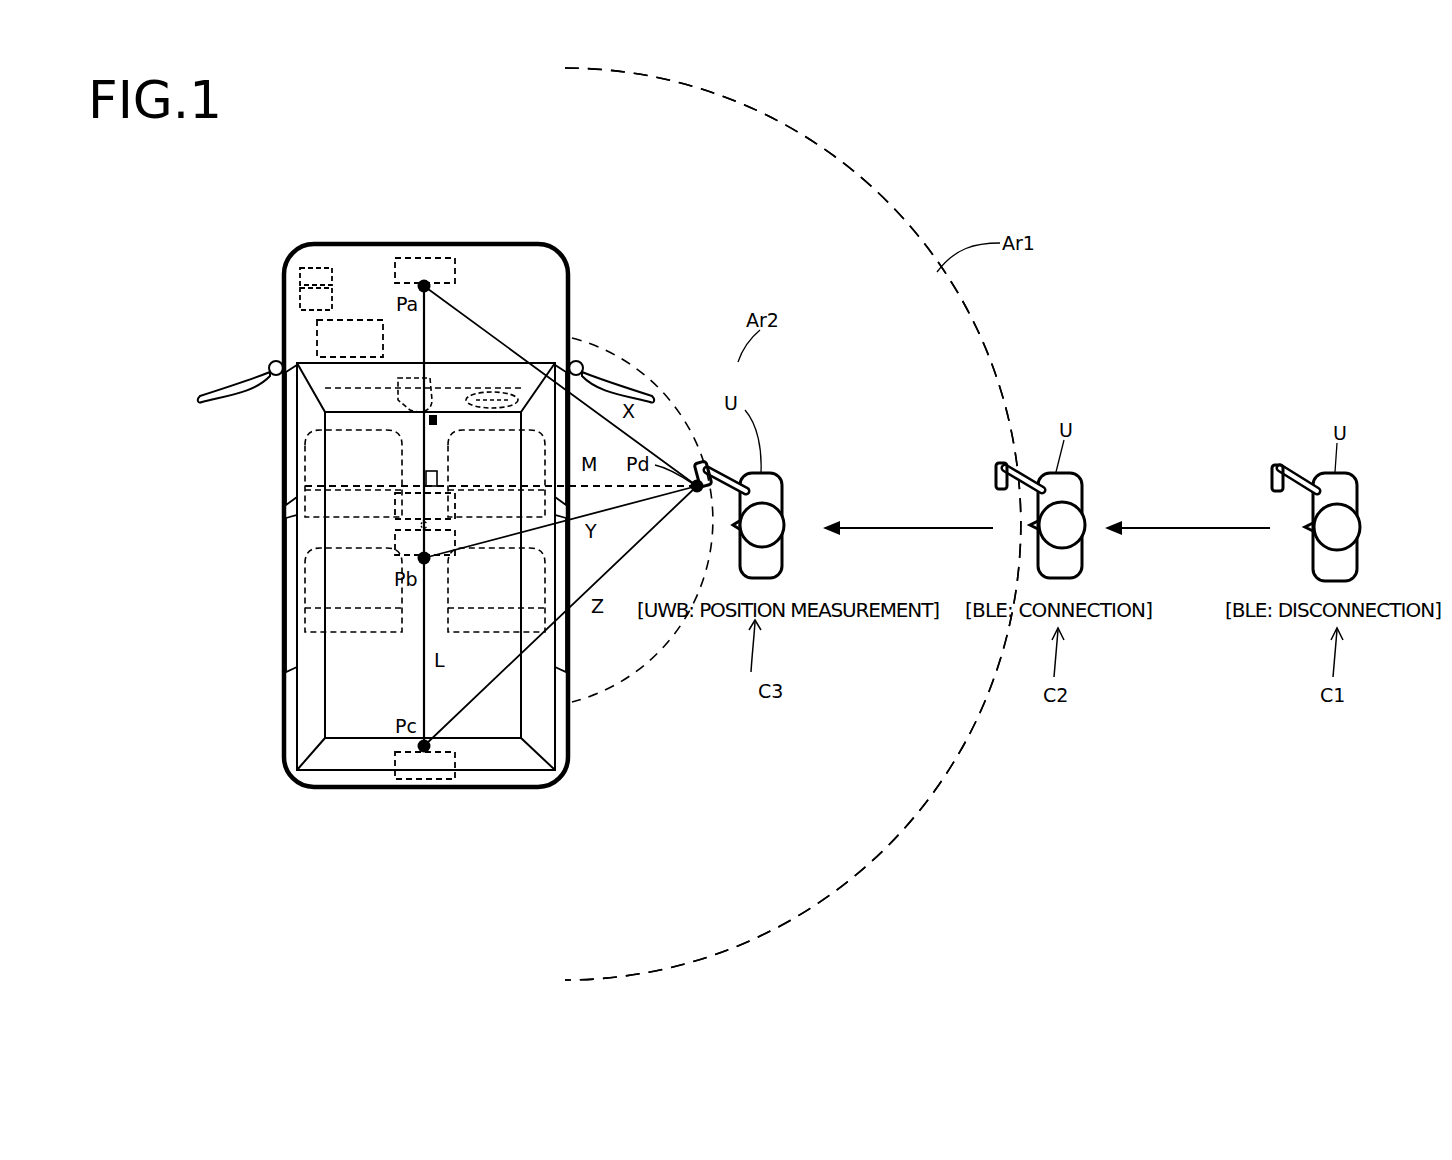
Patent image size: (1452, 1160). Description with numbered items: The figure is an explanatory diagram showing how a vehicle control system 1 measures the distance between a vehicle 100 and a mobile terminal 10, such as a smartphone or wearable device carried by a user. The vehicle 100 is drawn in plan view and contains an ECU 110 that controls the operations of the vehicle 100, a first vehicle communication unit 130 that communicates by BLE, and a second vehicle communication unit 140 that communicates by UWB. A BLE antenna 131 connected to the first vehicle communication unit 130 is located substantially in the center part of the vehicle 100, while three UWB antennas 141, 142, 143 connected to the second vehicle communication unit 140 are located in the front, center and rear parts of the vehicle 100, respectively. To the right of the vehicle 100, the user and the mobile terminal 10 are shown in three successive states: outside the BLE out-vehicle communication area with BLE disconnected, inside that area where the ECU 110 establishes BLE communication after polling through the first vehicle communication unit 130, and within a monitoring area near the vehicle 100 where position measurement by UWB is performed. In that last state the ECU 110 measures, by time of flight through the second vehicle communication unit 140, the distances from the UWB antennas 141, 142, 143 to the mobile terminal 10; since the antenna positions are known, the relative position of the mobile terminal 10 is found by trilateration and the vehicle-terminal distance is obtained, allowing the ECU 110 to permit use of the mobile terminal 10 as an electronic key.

The vehicle control system 1 is at (672, 242).
The mobile terminal 10 is at (1275, 483).
The vehicle 100 is at (497, 243).
The ECU 110 is at (317, 339).
The first vehicle communication unit 130 is at (300, 277).
The BLE antenna 131 is at (401, 496).
The second vehicle communication unit 140 is at (300, 299).
The UWB antenna 141 is at (455, 270).
The UWB antenna 142 is at (395, 548).
The UWB antenna 143 is at (424, 783).